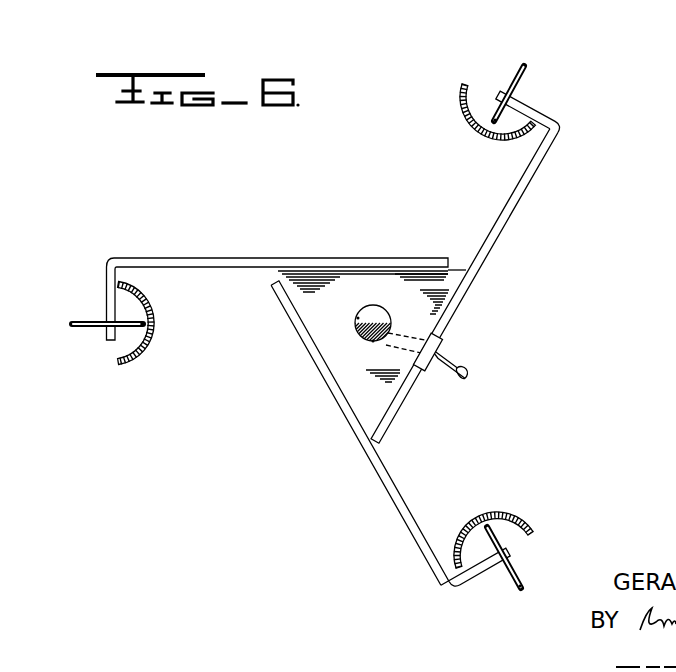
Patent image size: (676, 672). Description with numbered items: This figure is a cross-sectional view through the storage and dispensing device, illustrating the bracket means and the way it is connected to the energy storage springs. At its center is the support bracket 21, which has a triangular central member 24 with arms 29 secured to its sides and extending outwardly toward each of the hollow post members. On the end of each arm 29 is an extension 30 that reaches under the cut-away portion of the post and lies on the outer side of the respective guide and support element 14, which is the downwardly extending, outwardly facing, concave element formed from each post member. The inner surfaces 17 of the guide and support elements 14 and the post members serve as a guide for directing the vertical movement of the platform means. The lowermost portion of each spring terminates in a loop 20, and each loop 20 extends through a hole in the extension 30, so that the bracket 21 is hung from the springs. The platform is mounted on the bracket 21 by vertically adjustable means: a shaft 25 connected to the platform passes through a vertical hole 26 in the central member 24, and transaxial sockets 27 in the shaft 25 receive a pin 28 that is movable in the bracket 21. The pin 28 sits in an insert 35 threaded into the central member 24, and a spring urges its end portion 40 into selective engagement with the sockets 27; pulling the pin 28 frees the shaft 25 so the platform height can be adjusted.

The guide and support element 14 is at (130, 362).
The inner surfaces 17 is at (153, 323).
The loop 20 is at (83, 330).
The support bracket 21 is at (328, 419).
The triangular central member 24 is at (380, 290).
The shaft 25 is at (358, 317).
The vertical hole 26 is at (385, 307).
The transaxial sockets 27 is at (373, 341).
The pin 28 is at (460, 383).
The arms 29 is at (203, 258).
The extension 30 is at (107, 290).
The insert 35 is at (438, 341).
The end portion 40 is at (427, 317).